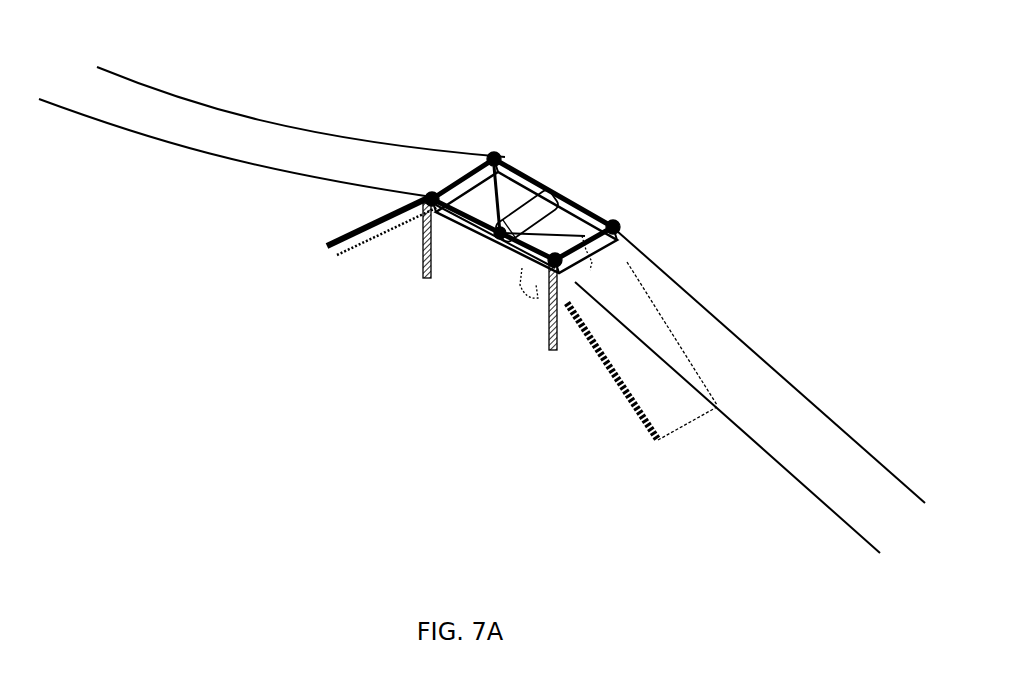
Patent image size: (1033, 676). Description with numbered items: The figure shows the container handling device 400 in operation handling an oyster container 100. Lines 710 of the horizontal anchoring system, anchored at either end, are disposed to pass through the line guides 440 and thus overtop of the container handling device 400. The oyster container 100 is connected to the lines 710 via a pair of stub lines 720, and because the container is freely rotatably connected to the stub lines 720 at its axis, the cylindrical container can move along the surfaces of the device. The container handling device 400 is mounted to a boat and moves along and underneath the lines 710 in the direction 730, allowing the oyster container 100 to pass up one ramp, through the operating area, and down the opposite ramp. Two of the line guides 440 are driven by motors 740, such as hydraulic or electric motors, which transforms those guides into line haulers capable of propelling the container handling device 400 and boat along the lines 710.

The lines 710 is at (268, 167).
The motors 740 is at (437, 190).
The stub lines 720 is at (478, 220).
The oyster container 100 is at (538, 220).
The line guides 440 is at (621, 222).
The container handling device 400 is at (345, 288).
The direction 730 is at (738, 507).